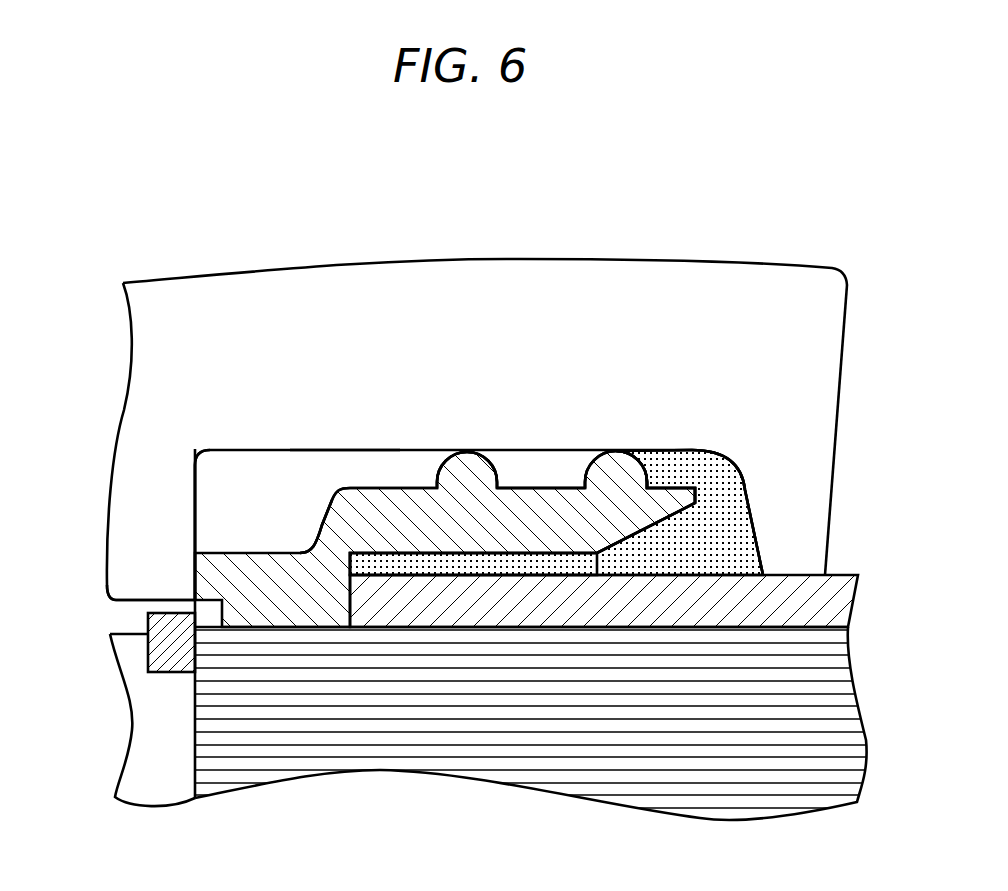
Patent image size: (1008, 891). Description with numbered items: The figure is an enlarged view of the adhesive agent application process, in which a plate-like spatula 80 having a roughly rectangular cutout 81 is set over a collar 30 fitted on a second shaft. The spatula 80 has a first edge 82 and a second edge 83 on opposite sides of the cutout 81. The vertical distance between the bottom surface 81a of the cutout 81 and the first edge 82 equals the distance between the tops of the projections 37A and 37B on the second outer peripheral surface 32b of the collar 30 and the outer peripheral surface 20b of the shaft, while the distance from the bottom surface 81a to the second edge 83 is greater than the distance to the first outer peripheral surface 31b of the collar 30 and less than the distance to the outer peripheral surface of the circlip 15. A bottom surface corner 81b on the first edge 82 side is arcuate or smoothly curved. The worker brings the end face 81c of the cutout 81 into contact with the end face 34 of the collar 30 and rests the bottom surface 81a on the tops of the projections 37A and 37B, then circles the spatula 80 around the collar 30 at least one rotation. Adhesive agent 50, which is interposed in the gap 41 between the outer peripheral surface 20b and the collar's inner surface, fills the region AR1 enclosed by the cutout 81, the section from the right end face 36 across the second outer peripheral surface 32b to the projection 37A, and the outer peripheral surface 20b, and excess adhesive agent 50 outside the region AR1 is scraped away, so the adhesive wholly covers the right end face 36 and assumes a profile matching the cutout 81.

The circlip 15 is at (147, 653).
The outer peripheral surface 20b is at (788, 570).
The collar 30 is at (415, 488).
The first outer peripheral surface 31b is at (230, 551).
The second outer peripheral surface 32b is at (552, 487).
The end face 34 is at (195, 578).
The right end face 36 is at (700, 492).
The projection 37A is at (620, 460).
The projection 37B is at (468, 457).
The gap 41 is at (468, 562).
The adhesive agent 50 is at (610, 557).
The spatula 80 is at (472, 259).
The cutout 81 is at (288, 450).
The bottom surface 81a is at (370, 450).
The bottom surface corner 81b is at (740, 489).
The end face 81c is at (195, 517).
The first edge 82 is at (800, 575).
The second edge 83 is at (130, 603).
The region AR1 is at (692, 460).